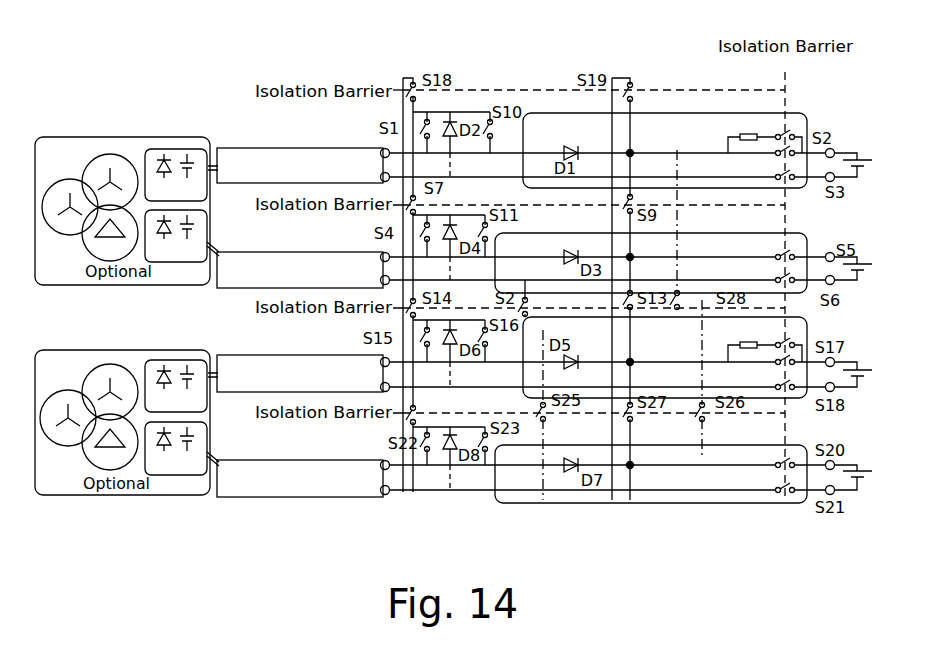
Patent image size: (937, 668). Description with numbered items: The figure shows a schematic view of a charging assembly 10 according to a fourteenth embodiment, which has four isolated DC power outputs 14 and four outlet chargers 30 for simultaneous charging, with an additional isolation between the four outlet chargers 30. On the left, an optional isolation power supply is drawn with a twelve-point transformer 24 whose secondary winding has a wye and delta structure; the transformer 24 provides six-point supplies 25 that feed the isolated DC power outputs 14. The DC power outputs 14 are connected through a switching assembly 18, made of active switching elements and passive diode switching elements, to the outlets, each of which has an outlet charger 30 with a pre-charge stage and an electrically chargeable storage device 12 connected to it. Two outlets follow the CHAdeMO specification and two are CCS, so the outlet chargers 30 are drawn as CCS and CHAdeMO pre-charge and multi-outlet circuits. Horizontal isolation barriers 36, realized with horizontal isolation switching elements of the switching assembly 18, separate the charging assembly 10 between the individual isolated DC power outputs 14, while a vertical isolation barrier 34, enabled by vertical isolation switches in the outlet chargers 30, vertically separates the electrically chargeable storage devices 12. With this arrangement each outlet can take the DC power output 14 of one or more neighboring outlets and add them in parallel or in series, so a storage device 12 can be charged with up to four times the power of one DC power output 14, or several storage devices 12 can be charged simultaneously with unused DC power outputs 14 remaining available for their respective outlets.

The charging assembly 10 is at (414, 68).
The electrically chargeable storage device 12 is at (849, 153).
The isolated DC power output 14 is at (278, 148).
The switching assembly 18 is at (513, 76).
The twelve-point transformer 24 is at (82, 172).
The six-point supply 25 is at (173, 150).
The outlet charger 30 is at (730, 113).
The vertical isolation barrier 34 is at (785, 500).
The horizontal isolation barrier 36 is at (762, 205).